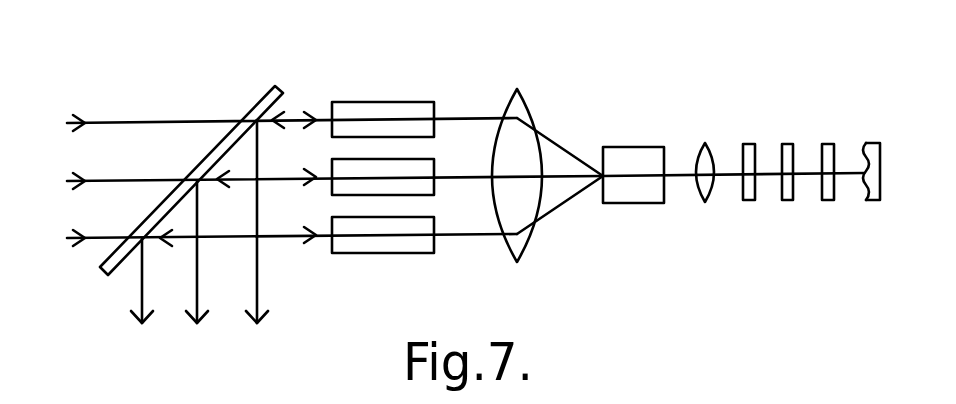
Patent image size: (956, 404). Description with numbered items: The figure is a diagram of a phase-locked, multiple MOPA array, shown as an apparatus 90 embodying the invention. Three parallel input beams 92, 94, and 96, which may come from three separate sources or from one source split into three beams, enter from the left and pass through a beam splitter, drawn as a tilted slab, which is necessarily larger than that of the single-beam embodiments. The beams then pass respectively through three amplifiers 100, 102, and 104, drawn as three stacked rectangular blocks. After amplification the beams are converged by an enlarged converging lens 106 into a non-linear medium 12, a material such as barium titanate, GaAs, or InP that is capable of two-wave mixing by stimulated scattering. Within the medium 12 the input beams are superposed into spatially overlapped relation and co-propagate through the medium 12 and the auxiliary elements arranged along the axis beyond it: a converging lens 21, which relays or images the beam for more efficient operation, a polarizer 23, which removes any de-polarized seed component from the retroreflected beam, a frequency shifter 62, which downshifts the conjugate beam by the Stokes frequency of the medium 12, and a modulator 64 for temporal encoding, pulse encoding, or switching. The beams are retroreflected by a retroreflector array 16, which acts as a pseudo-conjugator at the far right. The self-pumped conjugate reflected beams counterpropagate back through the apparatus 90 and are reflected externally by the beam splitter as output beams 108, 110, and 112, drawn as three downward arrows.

The apparatus 90 is at (487, 72).
The input beam 92 is at (160, 122).
The input beam 94 is at (130, 181).
The input beam 96 is at (105, 238).
The amplifier 100 is at (388, 102).
The amplifier 102 is at (436, 165).
The amplifier 104 is at (415, 253).
The enlarged converging lens 106 is at (525, 105).
The output beam 108 is at (260, 291).
The output beam 110 is at (198, 291).
The output beam 112 is at (141, 287).
The non-linear medium 12 is at (631, 147).
The converging lens 21 is at (705, 148).
The polarizer 23 is at (748, 200).
The frequency shifter 62 is at (788, 144).
The modulator 64 is at (826, 200).
The retroreflector array 16 is at (866, 143).